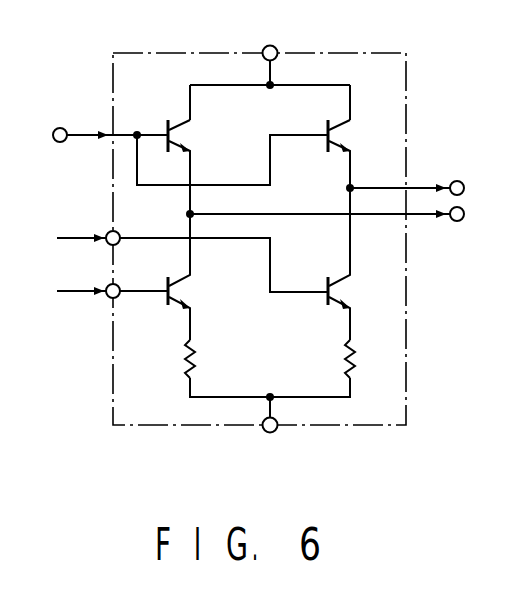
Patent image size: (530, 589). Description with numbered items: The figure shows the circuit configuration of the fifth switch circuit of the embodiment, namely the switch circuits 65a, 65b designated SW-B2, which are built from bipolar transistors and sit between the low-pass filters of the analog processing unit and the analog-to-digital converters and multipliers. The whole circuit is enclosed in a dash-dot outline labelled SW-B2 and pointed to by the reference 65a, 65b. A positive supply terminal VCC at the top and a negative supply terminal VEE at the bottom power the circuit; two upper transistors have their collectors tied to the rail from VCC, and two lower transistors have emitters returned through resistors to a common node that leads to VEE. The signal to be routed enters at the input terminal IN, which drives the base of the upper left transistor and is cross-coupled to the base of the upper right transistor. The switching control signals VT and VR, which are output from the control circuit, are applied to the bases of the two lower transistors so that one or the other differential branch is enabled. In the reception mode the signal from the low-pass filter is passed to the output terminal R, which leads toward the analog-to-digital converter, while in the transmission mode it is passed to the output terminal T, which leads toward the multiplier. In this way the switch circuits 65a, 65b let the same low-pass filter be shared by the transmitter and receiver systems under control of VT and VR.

The switch circuit 65a is at (280, 216).
The switch circuit 65b is at (346, 50).
The switch circuit designation SW-B2 is at (237, 207).
The positive supply terminal VCC is at (270, 44).
The negative supply terminal VEE is at (276, 433).
The input terminal IN is at (91, 135).
The transmission switching control signal VT is at (67, 239).
The reception switching control signal VR is at (91, 292).
The transmission output terminal T is at (416, 188).
The reception output terminal R is at (336, 214).